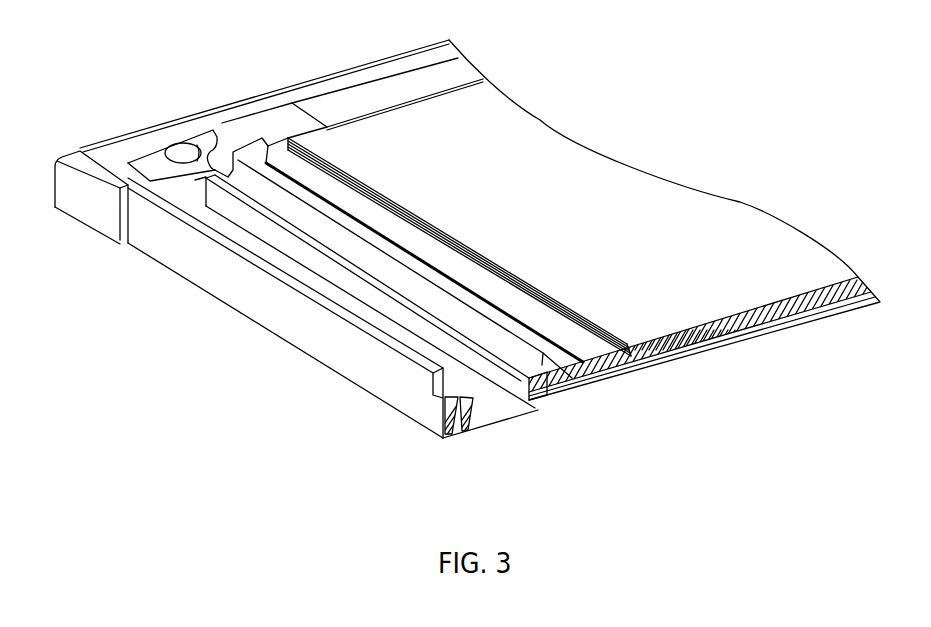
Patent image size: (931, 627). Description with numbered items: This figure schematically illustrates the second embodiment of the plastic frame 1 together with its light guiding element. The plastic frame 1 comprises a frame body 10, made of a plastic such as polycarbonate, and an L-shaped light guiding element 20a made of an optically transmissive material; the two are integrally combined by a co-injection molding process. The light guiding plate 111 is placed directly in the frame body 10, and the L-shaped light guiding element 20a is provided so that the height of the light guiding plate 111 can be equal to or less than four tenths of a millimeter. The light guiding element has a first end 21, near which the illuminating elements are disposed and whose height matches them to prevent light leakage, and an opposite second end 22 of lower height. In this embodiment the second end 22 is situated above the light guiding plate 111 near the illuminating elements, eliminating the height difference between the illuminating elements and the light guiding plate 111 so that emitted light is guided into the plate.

The plastic frame 1 is at (203, 305).
The frame body 10 is at (78, 152).
The light guiding plate 111 is at (728, 334).
The L-shaped light guiding element 20a is at (540, 392).
The first end 21 is at (522, 382).
The second end 22 is at (580, 382).